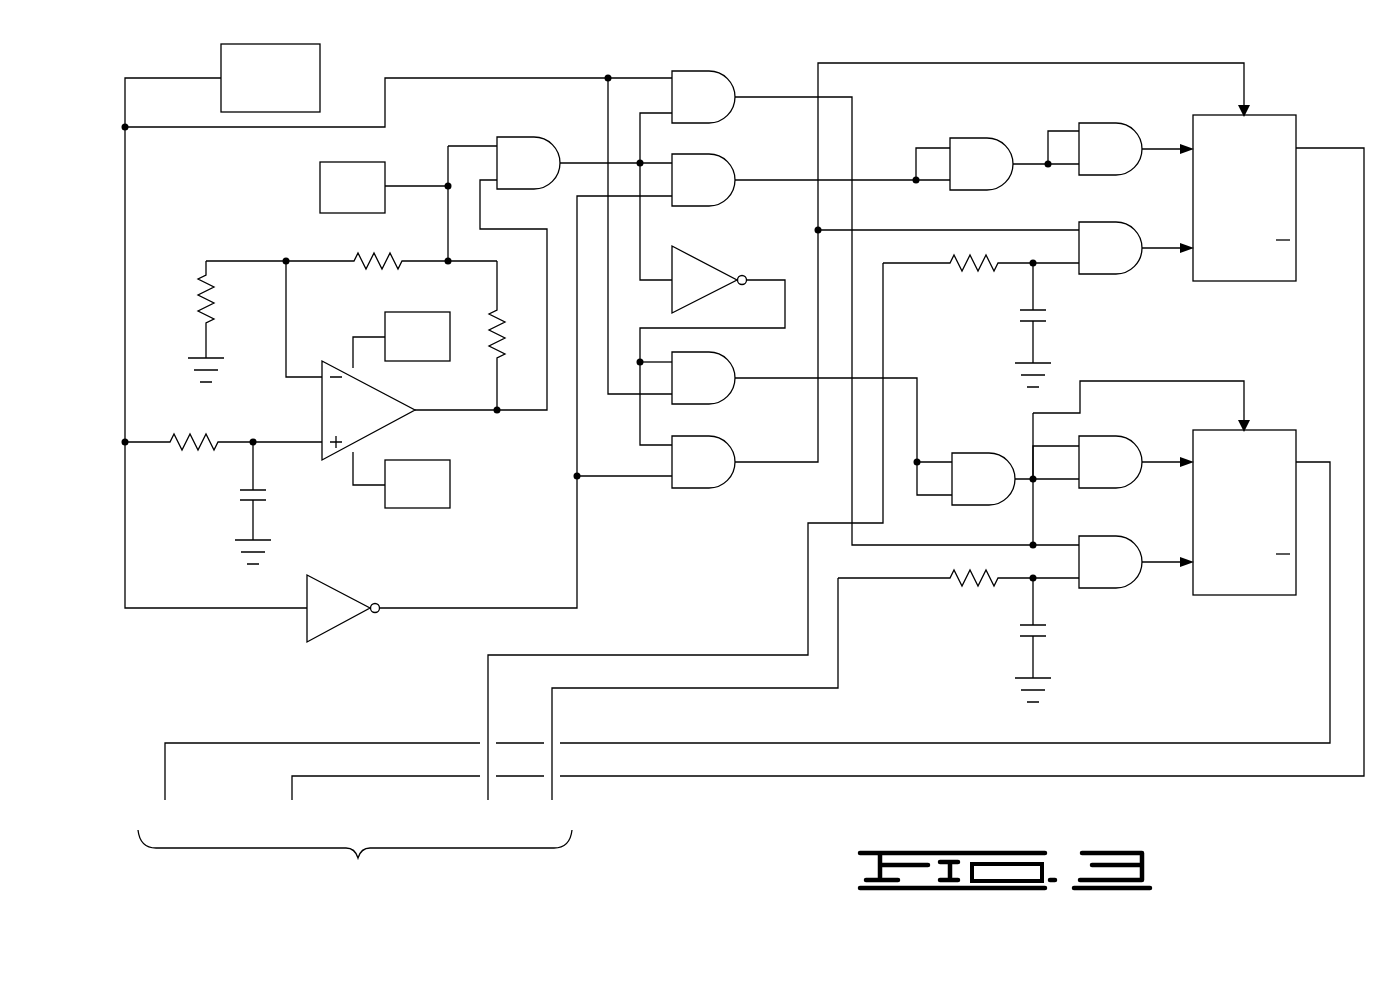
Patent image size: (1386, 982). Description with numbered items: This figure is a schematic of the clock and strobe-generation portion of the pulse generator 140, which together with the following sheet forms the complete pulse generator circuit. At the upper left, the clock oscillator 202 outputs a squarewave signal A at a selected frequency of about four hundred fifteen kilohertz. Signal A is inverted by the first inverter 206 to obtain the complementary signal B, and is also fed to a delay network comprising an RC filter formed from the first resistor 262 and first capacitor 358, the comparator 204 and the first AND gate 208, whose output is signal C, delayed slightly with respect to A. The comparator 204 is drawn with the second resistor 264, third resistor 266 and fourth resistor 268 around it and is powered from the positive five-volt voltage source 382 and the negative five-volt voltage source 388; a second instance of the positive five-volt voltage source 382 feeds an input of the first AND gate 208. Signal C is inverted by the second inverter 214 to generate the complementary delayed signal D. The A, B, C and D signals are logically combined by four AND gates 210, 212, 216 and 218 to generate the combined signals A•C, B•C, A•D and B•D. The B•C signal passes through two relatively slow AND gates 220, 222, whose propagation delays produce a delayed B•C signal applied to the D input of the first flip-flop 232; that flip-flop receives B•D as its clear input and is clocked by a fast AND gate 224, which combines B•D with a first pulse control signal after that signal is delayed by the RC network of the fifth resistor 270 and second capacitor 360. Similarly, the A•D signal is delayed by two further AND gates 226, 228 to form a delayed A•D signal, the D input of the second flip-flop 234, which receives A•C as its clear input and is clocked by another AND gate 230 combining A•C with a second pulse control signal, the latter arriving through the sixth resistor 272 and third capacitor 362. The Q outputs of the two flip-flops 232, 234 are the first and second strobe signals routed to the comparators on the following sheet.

The pulse generator 140 is at (1343, 69).
The X1 clock oscillator 202 is at (322, 62).
The X2 comparator 204 is at (388, 426).
The X3 inverter 206 is at (305, 628).
The X4 AND gate 208 is at (540, 137).
The X5 AND gate 210 is at (702, 74).
The X6 AND gate 212 is at (705, 157).
The X7 inverter 214 is at (706, 268).
The X8 AND gate 216 is at (736, 373).
The X9 AND gate 218 is at (702, 438).
The X10 AND gate 220 is at (990, 138).
The X11 AND gate 222 is at (1102, 124).
The X12 AND gate 224 is at (1100, 223).
The X13 AND gate 226 is at (990, 453).
The X14 AND gate 228 is at (1118, 490).
The X15 AND gate 230 is at (1102, 590).
The X16 DFLOP 232 is at (1280, 118).
The X17 DFLOP 234 is at (1276, 430).
The R1 resistor 262 is at (200, 452).
The R2 resistor 264 is at (203, 272).
The R3 resistor 266 is at (376, 272).
The R4 resistor 268 is at (492, 357).
The R5 resistor 270 is at (976, 272).
The R6 resistor 272 is at (976, 587).
The C1 capacitor 358 is at (265, 500).
The C2 capacitor 360 is at (1025, 322).
The C3 capacitor 362 is at (1025, 637).
The +5 V voltage source 382 is at (320, 183).
The −5 V voltage source 388 is at (420, 508).